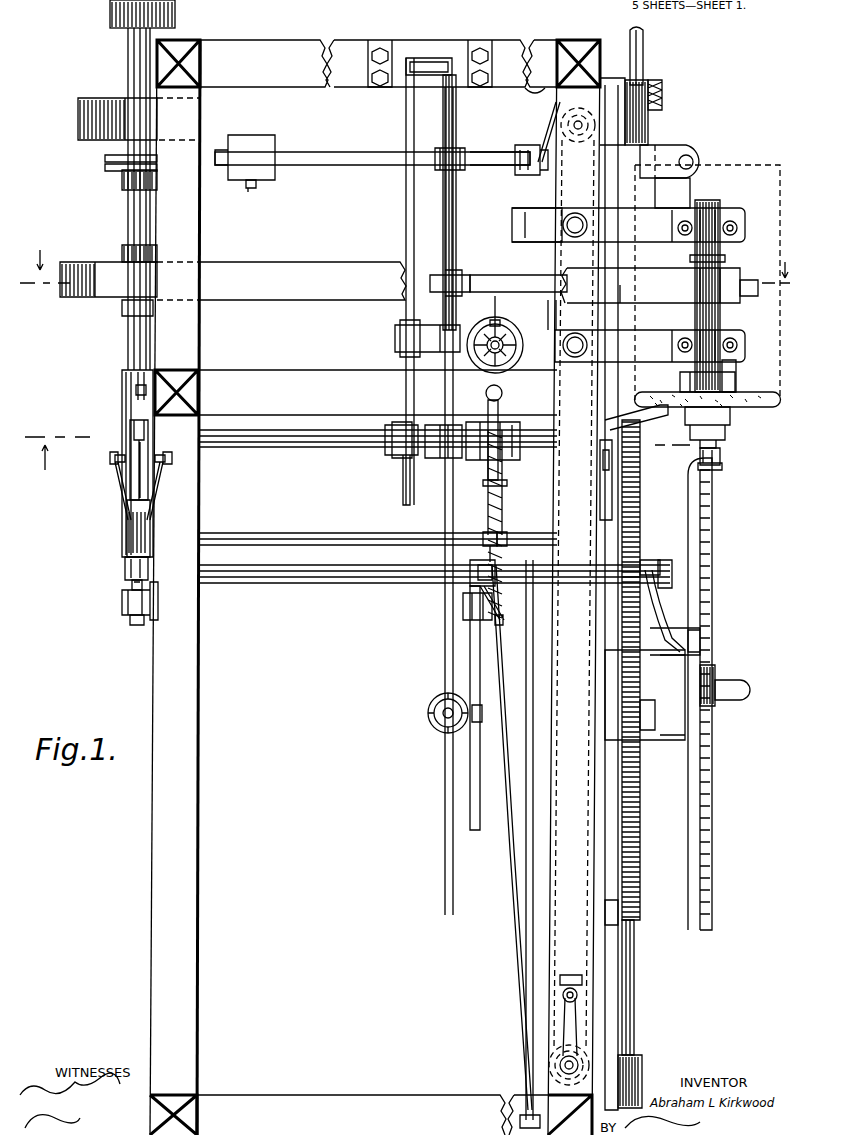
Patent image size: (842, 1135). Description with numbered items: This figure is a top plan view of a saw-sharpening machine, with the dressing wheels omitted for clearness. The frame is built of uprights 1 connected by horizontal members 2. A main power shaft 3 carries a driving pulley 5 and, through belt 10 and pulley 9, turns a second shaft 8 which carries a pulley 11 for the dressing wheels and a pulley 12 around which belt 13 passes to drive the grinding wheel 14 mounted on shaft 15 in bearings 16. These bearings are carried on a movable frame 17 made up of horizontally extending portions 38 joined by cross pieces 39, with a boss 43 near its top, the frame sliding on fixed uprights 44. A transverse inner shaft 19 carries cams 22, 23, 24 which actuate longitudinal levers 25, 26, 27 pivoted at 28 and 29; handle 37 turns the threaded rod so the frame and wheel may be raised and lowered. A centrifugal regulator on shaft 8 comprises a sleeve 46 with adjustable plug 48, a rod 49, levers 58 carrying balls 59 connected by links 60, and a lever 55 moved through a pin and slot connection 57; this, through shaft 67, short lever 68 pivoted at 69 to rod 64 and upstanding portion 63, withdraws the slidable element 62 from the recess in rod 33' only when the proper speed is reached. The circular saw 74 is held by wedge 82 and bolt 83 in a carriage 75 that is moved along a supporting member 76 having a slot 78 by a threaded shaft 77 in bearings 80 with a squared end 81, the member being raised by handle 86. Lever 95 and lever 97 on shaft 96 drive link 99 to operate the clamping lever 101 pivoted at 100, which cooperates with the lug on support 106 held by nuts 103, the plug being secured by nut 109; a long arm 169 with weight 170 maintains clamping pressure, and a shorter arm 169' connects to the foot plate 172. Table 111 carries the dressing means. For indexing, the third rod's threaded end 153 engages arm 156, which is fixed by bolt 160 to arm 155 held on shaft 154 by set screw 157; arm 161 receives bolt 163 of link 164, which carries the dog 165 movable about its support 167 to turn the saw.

The uprights 1 is at (183, 40).
The horizontal members 2 is at (308, 380).
The shaft 3 is at (406, 270).
The driving pulley 5 is at (110, 12).
The shaft 8 is at (132, 205).
The pulley 9 is at (104, 98).
The belt 10 is at (80, 122).
The pulley 11 is at (105, 166).
The pulley 12 is at (82, 297).
The belt 13 is at (92, 270).
The grinding wheel 14 is at (760, 407).
The shaft 15 is at (696, 316).
The bearings 16 is at (712, 208).
The movable frame 17 is at (522, 218).
The inner shaft 19 is at (240, 449).
The cam 22 is at (390, 457).
The cam 23 is at (436, 458).
The cam 24 is at (512, 465).
The lever 25 is at (512, 850).
The lever 26 is at (445, 656).
The lever 27 is at (406, 188).
The pivot 28 is at (522, 1110).
The pivot 29 is at (420, 60).
The rod 33' is at (467, 393).
The handle 37 is at (510, 330).
The horizontally extending portions 38 is at (610, 366).
The cross pieces 39 is at (612, 272).
The boss 43 is at (542, 345).
The fixed uprights 44 is at (574, 220).
The sleeve 46 is at (128, 445).
The adjustable plug 48 is at (128, 571).
The rod 49 is at (134, 585).
The lever 55 is at (132, 610).
The pin and slot connection 57 is at (124, 598).
The levers 58 is at (140, 478).
The weight or ball 59 is at (138, 522).
The links 60 is at (118, 486).
The slidable element 62 is at (498, 418).
The upstanding portion 63 is at (484, 482).
The rod 64 is at (500, 528).
The shaft 67 is at (312, 533).
The short lever 68 is at (504, 540).
The pivotal engagement 69 is at (482, 538).
The circular saw 74 is at (712, 845).
The carriage 75 is at (648, 740).
The supporting member 76 is at (600, 968).
The threaded shaft 77 is at (634, 1012).
The slot 78 is at (605, 925).
The bearings 80 is at (648, 126).
The squared end 81 is at (643, 48).
The wedge 82 is at (722, 688).
The bolt 83 is at (740, 700).
The handle 86 is at (571, 1028).
The lever 95 is at (398, 338).
The shaft 96 is at (445, 240).
The lever 97 is at (458, 277).
The link 99 is at (520, 276).
The pivot 100 is at (693, 160).
The lever 101 is at (736, 377).
The nuts 103 is at (672, 388).
The support 106 is at (655, 192).
The nut 109 is at (770, 395).
The table or supporting device 111 is at (250, 190).
The threaded end 153 is at (432, 725).
The shaft 154 is at (332, 583).
The arm 155 is at (490, 620).
The arm 156 is at (470, 616).
The set screw 157 is at (474, 565).
The bolt 160 is at (464, 635).
The arm 161 is at (662, 612).
The bolt 163 is at (700, 640).
The link 164 is at (688, 543).
The dog 165 is at (716, 464).
The support 167 is at (722, 452).
The long arm 169 is at (372, 167).
The shorter arm 169' is at (500, 149).
The weight 170 is at (262, 150).
The foot plate 172 is at (662, 82).